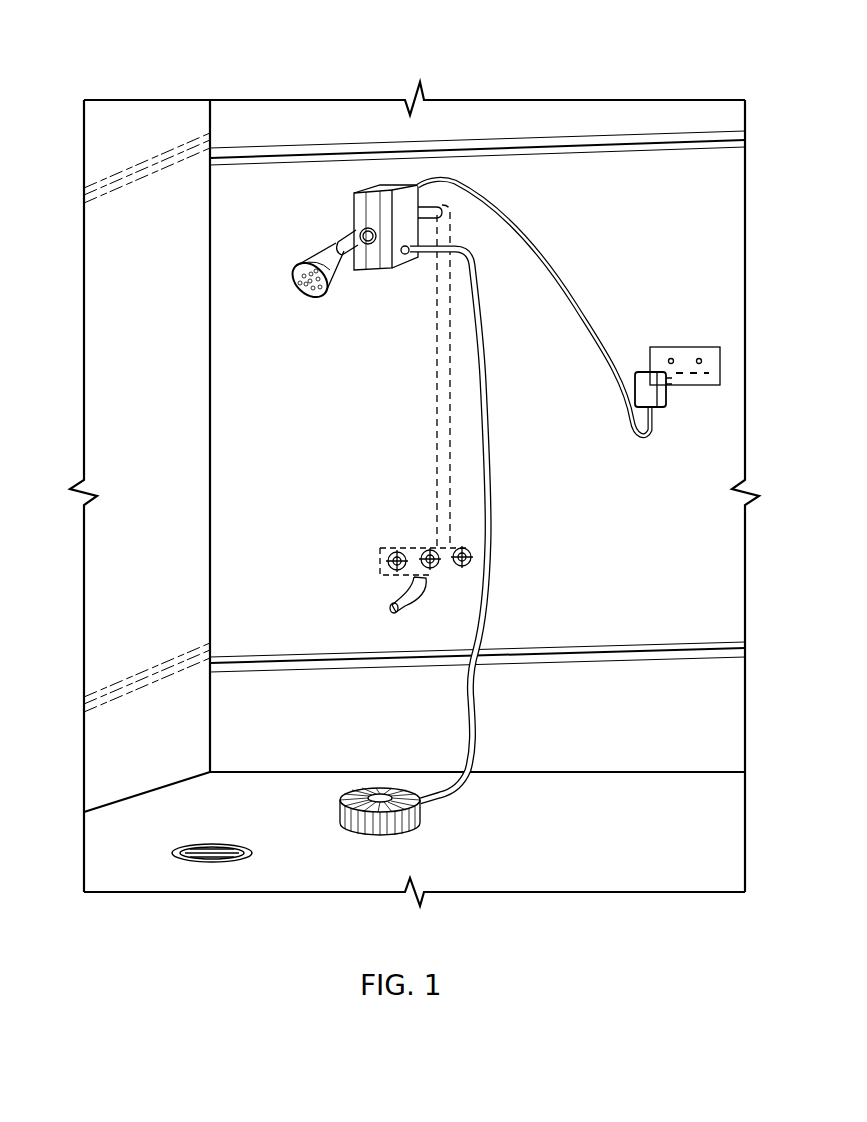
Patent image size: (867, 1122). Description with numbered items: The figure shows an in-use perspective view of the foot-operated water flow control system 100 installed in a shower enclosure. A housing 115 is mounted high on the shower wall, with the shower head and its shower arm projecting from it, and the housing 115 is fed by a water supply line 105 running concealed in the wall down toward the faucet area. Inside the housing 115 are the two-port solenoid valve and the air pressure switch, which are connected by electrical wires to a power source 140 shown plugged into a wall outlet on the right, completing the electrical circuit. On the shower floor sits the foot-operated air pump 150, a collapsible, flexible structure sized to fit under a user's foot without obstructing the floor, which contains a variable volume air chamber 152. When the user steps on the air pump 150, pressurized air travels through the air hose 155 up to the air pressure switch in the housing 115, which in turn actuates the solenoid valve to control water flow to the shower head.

The foot-operated water flow control system 100 is at (238, 85).
The water supply line 105 is at (437, 405).
The housing 115 is at (382, 190).
The power source 140 is at (647, 385).
The foot-operated air pump 150 is at (412, 826).
The variable volume air chamber 152 is at (355, 820).
The air hose 155 is at (470, 773).